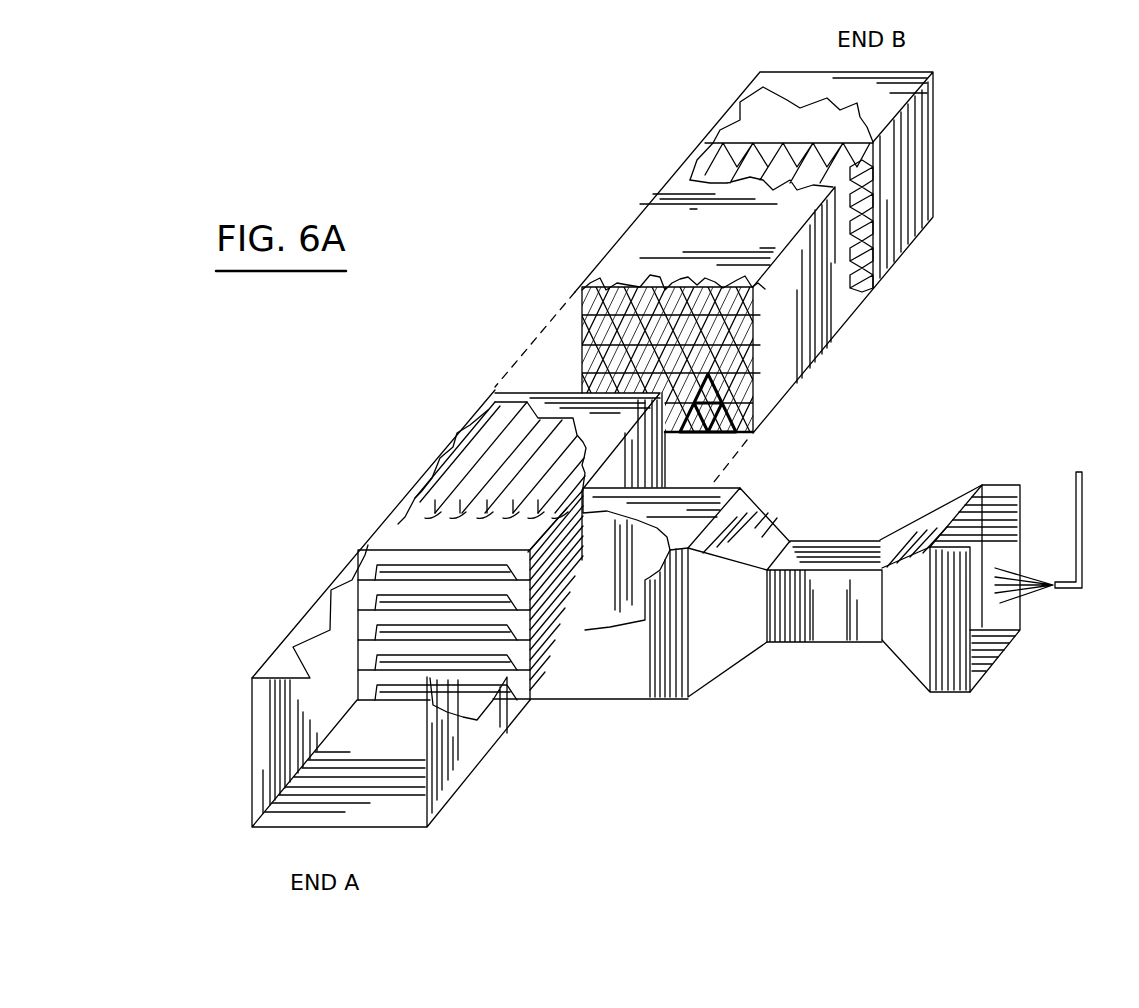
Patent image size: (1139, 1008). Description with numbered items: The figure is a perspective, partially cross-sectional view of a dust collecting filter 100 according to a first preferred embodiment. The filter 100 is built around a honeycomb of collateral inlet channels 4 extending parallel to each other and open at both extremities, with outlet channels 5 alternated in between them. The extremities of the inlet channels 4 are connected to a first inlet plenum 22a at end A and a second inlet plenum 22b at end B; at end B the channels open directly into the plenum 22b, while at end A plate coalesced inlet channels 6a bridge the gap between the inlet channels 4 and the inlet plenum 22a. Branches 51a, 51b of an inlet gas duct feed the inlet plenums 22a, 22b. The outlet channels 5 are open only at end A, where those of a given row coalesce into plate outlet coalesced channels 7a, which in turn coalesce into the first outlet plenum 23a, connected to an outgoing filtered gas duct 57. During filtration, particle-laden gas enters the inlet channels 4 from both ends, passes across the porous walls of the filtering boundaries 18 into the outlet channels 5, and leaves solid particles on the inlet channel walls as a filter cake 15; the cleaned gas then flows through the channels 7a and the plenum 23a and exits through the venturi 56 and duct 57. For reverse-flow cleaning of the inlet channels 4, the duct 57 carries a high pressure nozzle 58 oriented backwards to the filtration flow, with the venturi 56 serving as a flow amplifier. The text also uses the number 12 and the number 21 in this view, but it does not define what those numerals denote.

The filter 100 is at (533, 209).
The second inlet plenum 22b is at (800, 120).
The inlet gas duct branch 51b is at (907, 232).
The top panel 21 is at (723, 237).
The outlet channel 5 is at (650, 297).
The inlet channel 4 is at (582, 312).
The filtering boundary 18 is at (700, 378).
The filter cake 15 is at (683, 442).
The fin block 12 is at (528, 473).
The plate outlet coalesced channel 7a is at (415, 540).
The first inlet plenum 22a is at (307, 678).
The plate coalesced inlet channel 6a is at (463, 600).
The inlet gas duct branch 51a is at (410, 800).
The first outlet plenum 23a is at (608, 577).
The filtered gas duct 57 is at (668, 697).
The venturi 56 is at (808, 637).
The high pressure nozzle 58 is at (1077, 592).